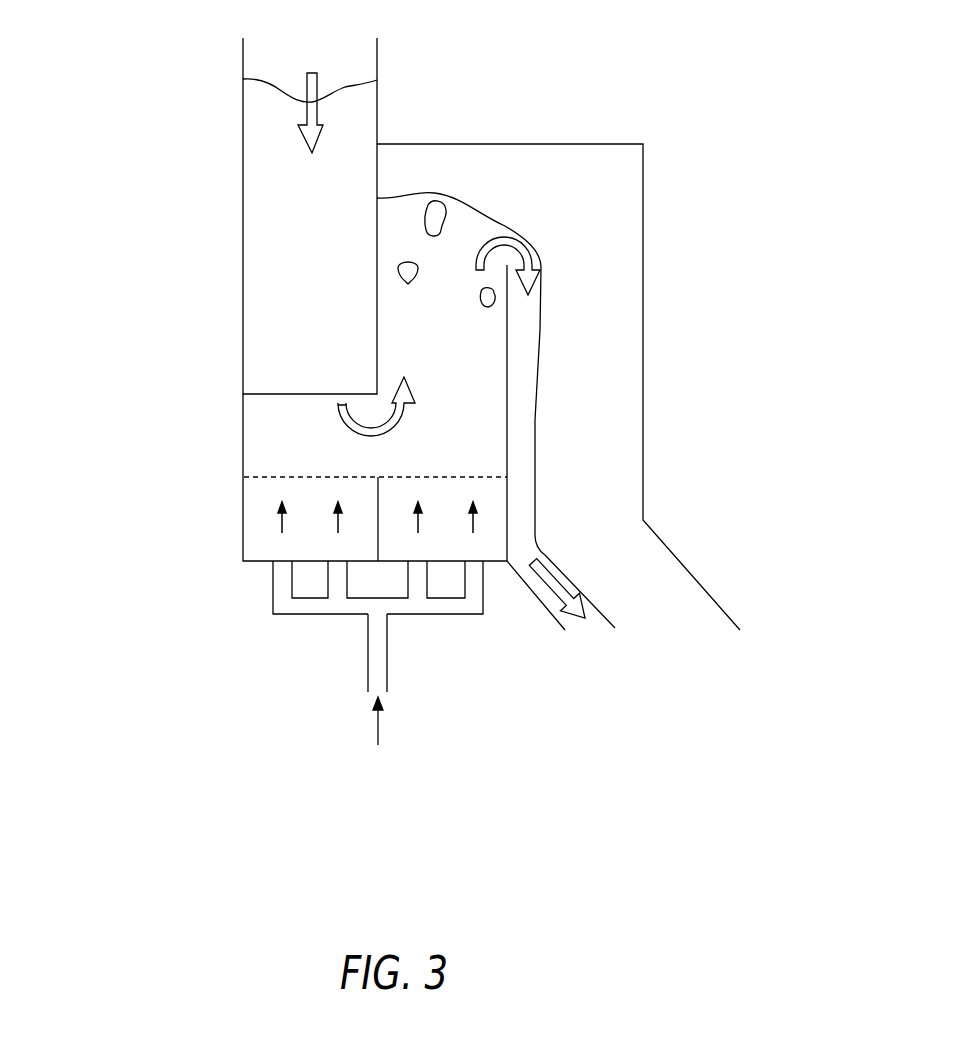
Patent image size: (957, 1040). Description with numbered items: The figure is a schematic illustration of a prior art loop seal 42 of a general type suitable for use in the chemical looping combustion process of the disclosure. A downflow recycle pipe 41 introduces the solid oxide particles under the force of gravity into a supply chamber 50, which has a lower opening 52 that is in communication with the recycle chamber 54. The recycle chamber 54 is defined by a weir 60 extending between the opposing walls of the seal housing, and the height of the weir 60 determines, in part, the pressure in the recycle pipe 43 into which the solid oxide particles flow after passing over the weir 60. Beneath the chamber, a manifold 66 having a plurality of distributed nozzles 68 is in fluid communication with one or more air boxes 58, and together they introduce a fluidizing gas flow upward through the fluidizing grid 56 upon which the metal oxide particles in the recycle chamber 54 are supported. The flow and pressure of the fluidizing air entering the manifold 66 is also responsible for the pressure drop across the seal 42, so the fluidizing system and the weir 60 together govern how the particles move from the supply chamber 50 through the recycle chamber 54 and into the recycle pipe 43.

The downflow recycle pipe 41 is at (243, 90).
The loop seal 42 is at (153, 250).
The recycle pipe 43 is at (645, 577).
The supply chamber 50 is at (257, 304).
The lower opening 52 is at (274, 394).
The recycle chamber 54 is at (287, 442).
The fluidizing grid 56 is at (262, 478).
The air box 58 is at (260, 540).
The weir 60 is at (507, 364).
The manifold 66 is at (388, 665).
The distributed nozzles 68 is at (270, 590).